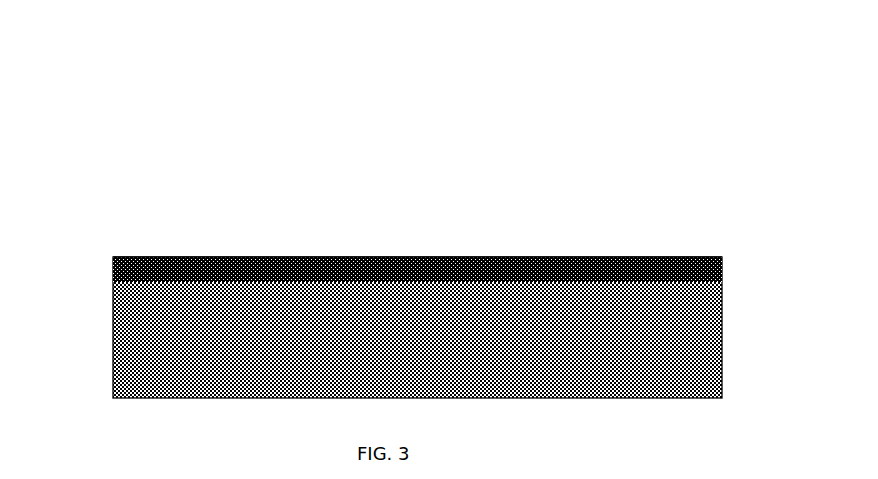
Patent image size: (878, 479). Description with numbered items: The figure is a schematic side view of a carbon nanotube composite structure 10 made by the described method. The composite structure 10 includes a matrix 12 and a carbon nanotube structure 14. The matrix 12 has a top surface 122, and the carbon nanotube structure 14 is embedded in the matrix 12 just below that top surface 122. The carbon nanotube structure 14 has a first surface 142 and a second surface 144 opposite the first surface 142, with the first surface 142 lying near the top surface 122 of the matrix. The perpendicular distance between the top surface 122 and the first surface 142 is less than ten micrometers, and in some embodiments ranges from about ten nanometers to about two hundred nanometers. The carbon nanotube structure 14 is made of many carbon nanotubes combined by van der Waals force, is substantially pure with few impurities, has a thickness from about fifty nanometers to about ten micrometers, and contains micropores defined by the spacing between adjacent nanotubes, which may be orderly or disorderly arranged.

The carbon nanotube composite structure 10 is at (372, 100).
The matrix 12 is at (723, 350).
The carbon nanotube structure 14 is at (113, 268).
The top surface 122 is at (590, 258).
The first surface 142 is at (395, 262).
The second surface 144 is at (652, 281).